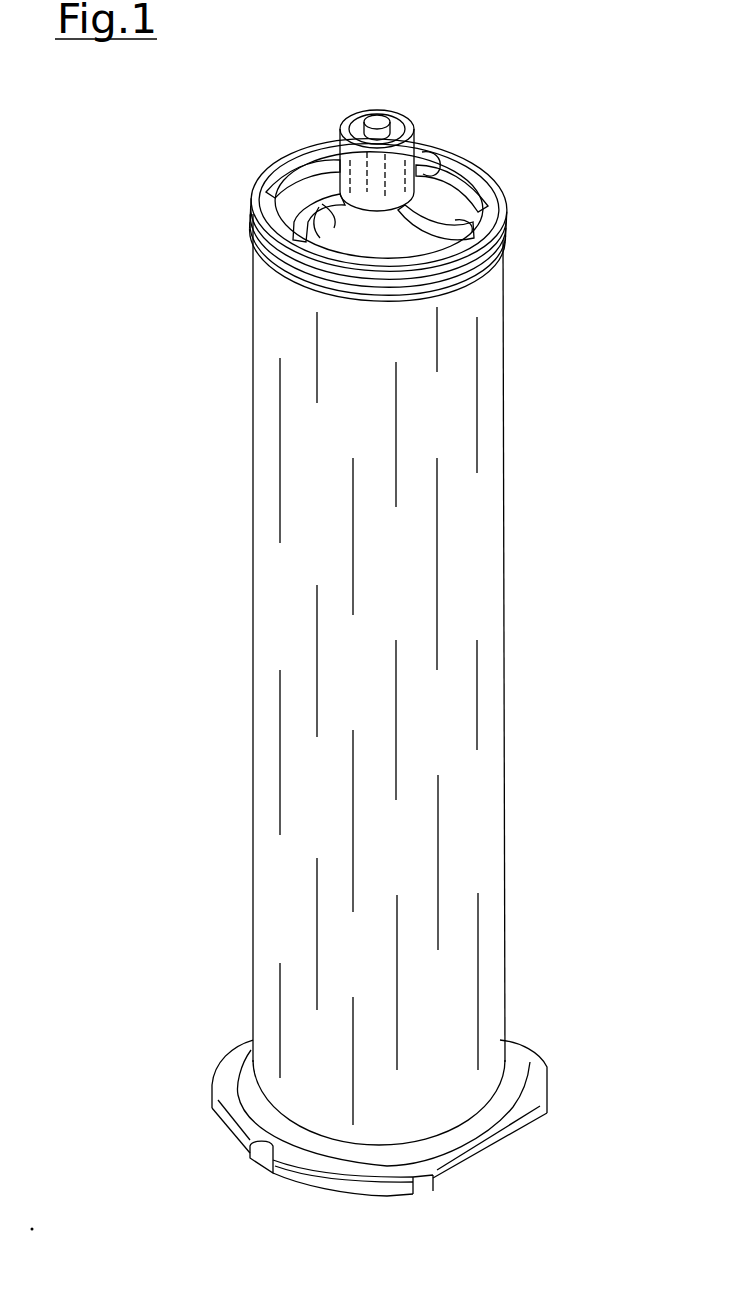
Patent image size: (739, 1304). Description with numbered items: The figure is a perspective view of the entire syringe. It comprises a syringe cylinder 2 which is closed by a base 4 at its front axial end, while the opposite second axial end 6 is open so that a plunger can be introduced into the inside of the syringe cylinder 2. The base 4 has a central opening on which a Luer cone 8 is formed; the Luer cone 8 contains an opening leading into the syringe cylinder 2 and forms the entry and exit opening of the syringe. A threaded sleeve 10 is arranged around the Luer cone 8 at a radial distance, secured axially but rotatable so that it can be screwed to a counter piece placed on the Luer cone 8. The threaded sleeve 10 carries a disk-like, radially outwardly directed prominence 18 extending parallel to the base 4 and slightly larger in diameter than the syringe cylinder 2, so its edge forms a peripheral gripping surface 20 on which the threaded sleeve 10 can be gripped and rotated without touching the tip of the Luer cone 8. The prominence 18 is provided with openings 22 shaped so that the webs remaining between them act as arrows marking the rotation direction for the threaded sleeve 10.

The syringe cylinder 2 is at (477, 573).
The base 4 is at (472, 207).
The second axial end 6 is at (517, 1153).
The Luer cone 8 is at (382, 130).
The threaded sleeve 10 is at (342, 159).
The prominence 18 is at (440, 176).
The gripping surface 20 is at (507, 233).
The openings 22 is at (338, 160).